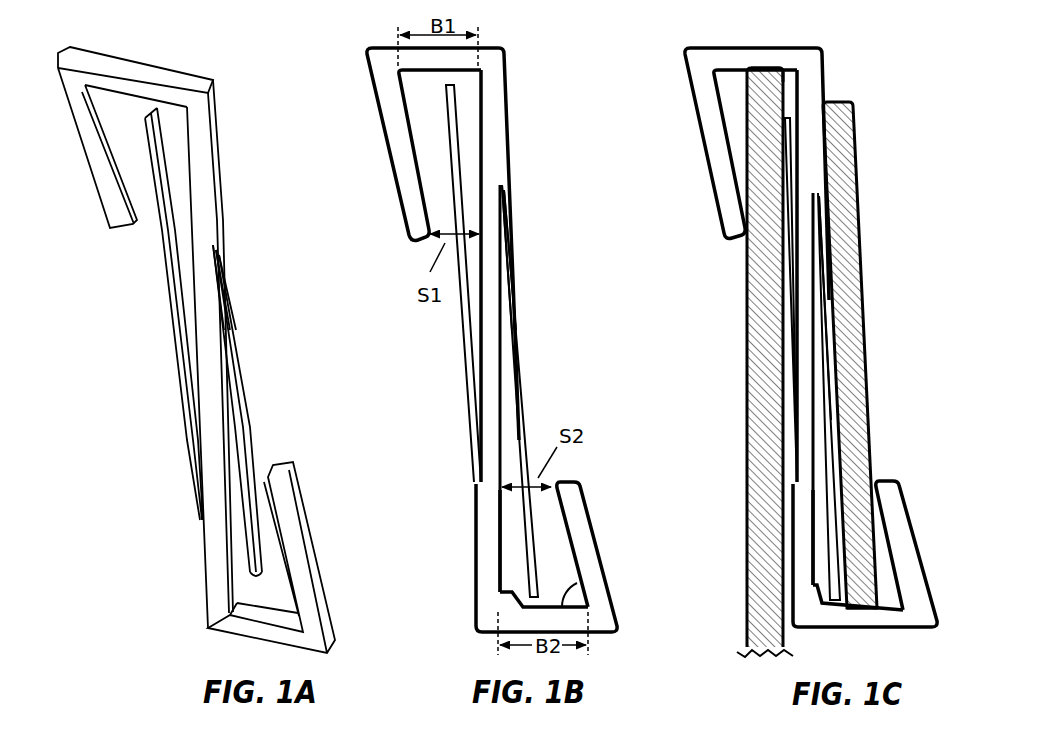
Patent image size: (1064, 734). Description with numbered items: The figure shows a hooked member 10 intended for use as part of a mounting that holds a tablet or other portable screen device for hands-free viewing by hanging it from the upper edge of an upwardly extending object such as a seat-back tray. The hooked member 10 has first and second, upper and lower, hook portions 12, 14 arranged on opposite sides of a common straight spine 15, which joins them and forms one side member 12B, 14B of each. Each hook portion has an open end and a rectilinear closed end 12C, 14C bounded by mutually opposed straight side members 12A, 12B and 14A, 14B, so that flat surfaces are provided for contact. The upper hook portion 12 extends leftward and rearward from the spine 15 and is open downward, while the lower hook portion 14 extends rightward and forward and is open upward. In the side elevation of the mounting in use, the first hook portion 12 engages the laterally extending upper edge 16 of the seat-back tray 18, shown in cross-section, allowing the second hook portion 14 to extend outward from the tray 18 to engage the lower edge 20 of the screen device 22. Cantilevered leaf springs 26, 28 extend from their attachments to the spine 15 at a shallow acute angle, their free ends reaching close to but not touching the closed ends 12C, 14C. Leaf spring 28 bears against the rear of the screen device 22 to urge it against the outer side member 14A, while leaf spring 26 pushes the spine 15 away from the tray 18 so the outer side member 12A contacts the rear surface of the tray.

In FIG. 1A, the hooked member 10 is at (207, 350).
In FIG. 1A, the first hook portion 12 is at (90, 175).
In FIG. 1B, the first hook portion 12 is at (441, 265).
In FIG. 1C, the first hook portion 12 is at (729, 265).
In FIG. 1B, the outer side member of first hook portion 12A is at (398, 155).
In FIG. 1C, the outer side member of first hook portion 12A is at (718, 165).
In FIG. 1B, the side member of first hook portion 12B is at (490, 107).
In FIG. 1C, the side member of first hook portion 12B is at (813, 268).
In FIG. 1B, the closed end of first hook portion 12C is at (420, 72).
In FIG. 1C, the closed end of first hook portion 12C is at (727, 92).
In FIG. 1A, the second hook portion 14 is at (312, 525).
In FIG. 1B, the second hook portion 14 is at (524, 557).
In FIG. 1C, the second hook portion 14 is at (815, 554).
In FIG. 1B, the outer side member of second hook portion 14A is at (588, 565).
In FIG. 1C, the outer side member of second hook portion 14A is at (908, 562).
In FIG. 1B, the side member of second hook portion 14B is at (488, 527).
In FIG. 1C, the side member of second hook portion 14B is at (805, 542).
In FIG. 1B, the closed end of second hook portion 14C is at (508, 595).
In FIG. 1C, the closed end of second hook portion 14C is at (808, 585).
In FIG. 1A, the spine 15 is at (215, 472).
In FIG. 1B, the spine 15 is at (493, 370).
In FIG. 1C, the spine 15 is at (807, 278).
In FIG. 1C, the upper edge of seat-back tray 16 is at (781, 77).
In FIG. 1C, the seat-back tray 18 is at (753, 375).
In FIG. 1C, the lower edge of screen device 20 is at (880, 578).
In FIG. 1C, the screen device 22 is at (866, 298).
In FIG. 1A, the leaf spring 26 is at (168, 302).
In FIG. 1B, the leaf spring 26 is at (465, 333).
In FIG. 1C, the leaf spring 26 is at (788, 427).
In FIG. 1A, the leaf spring 28 is at (245, 428).
In FIG. 1B, the leaf spring 28 is at (517, 317).
In FIG. 1C, the leaf spring 28 is at (833, 413).